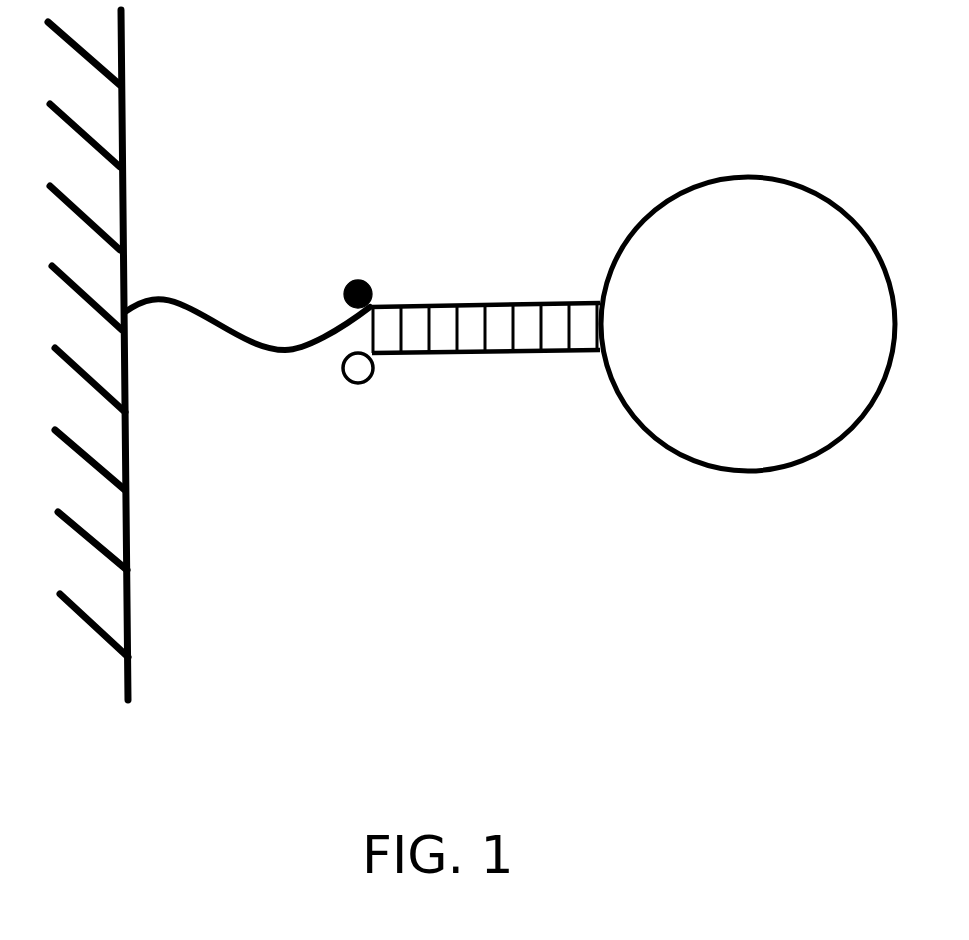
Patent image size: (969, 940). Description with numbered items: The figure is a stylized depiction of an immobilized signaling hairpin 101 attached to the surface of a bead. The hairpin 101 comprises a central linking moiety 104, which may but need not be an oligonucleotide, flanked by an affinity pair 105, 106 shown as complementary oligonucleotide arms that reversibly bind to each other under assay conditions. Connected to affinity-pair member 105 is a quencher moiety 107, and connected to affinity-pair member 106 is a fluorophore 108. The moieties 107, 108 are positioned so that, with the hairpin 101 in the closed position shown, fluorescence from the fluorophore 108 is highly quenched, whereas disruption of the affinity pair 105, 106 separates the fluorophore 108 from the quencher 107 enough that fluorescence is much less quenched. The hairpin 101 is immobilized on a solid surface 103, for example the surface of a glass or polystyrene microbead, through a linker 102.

The signaling hairpin 101 is at (578, 520).
The linker 102 is at (215, 320).
The solid surface 103 is at (130, 640).
The central linking moiety 104 is at (743, 178).
The affinity-pair member (oligonucleotide arm) 105 is at (495, 303).
The affinity-pair member (oligonucleotide arm) 106 is at (490, 380).
The quencher moiety 107 is at (364, 280).
The fluorophore 108 is at (353, 384).